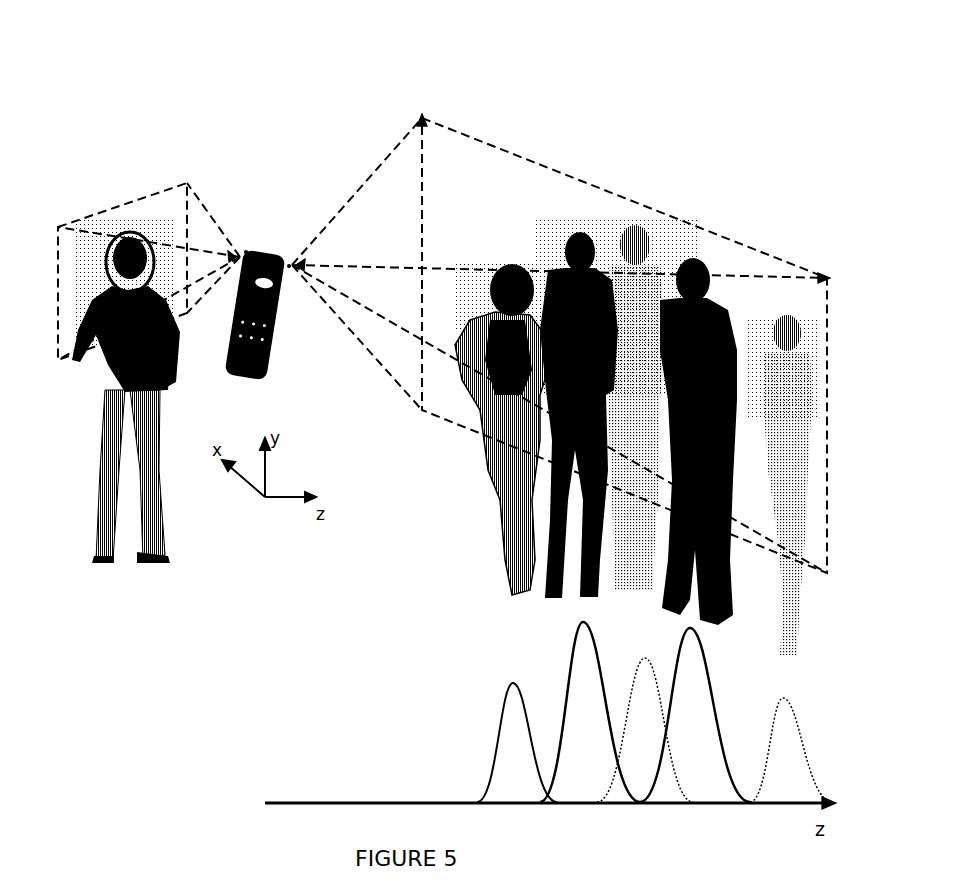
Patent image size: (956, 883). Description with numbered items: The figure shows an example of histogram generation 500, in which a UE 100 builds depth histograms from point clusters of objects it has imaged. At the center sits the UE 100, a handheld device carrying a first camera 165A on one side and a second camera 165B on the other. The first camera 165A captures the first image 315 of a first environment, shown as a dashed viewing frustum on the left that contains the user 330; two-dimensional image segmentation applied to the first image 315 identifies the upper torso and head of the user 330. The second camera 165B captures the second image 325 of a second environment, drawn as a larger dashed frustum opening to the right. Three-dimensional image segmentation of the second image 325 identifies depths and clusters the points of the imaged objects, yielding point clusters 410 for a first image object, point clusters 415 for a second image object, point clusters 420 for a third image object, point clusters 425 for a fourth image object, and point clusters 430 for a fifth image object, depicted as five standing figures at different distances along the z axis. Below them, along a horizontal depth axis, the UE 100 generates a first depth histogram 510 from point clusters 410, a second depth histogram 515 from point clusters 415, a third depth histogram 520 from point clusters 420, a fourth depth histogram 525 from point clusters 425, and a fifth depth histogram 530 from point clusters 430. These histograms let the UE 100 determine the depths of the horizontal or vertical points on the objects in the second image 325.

The histogram generation 500 is at (276, 76).
The first image 315 is at (147, 195).
The user 330 is at (72, 358).
The UE 100 is at (247, 374).
The first camera 165A is at (254, 245).
The second camera 165B is at (292, 270).
The second image 325 is at (466, 134).
The point clusters 410 is at (490, 262).
The point clusters 415 is at (552, 235).
The point clusters 420 is at (628, 240).
The point clusters 425 is at (705, 262).
The point clusters 430 is at (790, 330).
The first depth histogram 510 is at (494, 755).
The second depth histogram 515 is at (568, 672).
The third depth histogram 520 is at (643, 657).
The fourth depth histogram 525 is at (718, 728).
The fifth depth histogram 530 is at (798, 724).